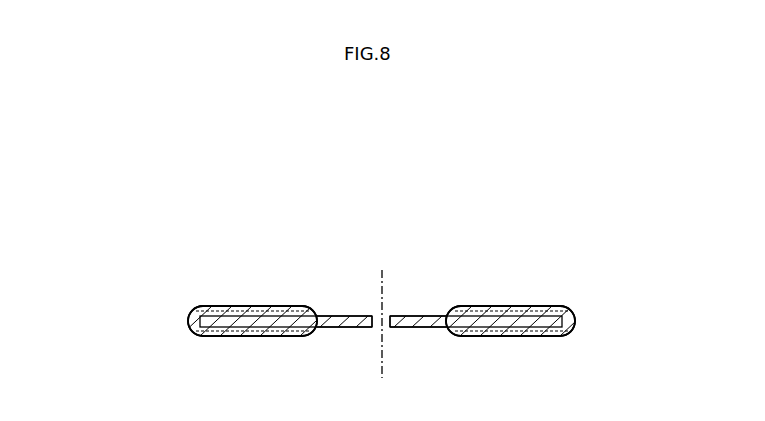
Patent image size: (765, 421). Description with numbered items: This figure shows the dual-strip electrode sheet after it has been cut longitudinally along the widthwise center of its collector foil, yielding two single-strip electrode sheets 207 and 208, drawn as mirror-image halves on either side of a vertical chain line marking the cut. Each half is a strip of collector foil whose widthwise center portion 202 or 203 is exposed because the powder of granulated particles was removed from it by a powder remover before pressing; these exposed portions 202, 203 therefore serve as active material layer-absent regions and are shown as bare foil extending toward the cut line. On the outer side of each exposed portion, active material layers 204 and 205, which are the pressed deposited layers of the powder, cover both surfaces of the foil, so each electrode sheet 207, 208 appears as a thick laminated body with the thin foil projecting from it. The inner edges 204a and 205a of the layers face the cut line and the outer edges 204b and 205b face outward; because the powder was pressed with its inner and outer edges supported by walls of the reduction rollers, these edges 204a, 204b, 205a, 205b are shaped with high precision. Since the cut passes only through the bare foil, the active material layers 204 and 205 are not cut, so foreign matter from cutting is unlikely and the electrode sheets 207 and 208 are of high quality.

The widthwise center portion 202 is at (333, 315).
The widthwise center portion 203 is at (436, 315).
The active material layer 204 is at (216, 305).
The inner edge 204a is at (318, 306).
The outer edge 204b is at (188, 303).
The active material layer 205 is at (545, 305).
The inner edge 205a is at (448, 306).
The outer edge 205b is at (574, 303).
The electrode sheet 207 is at (270, 297).
The electrode sheet 208 is at (497, 297).